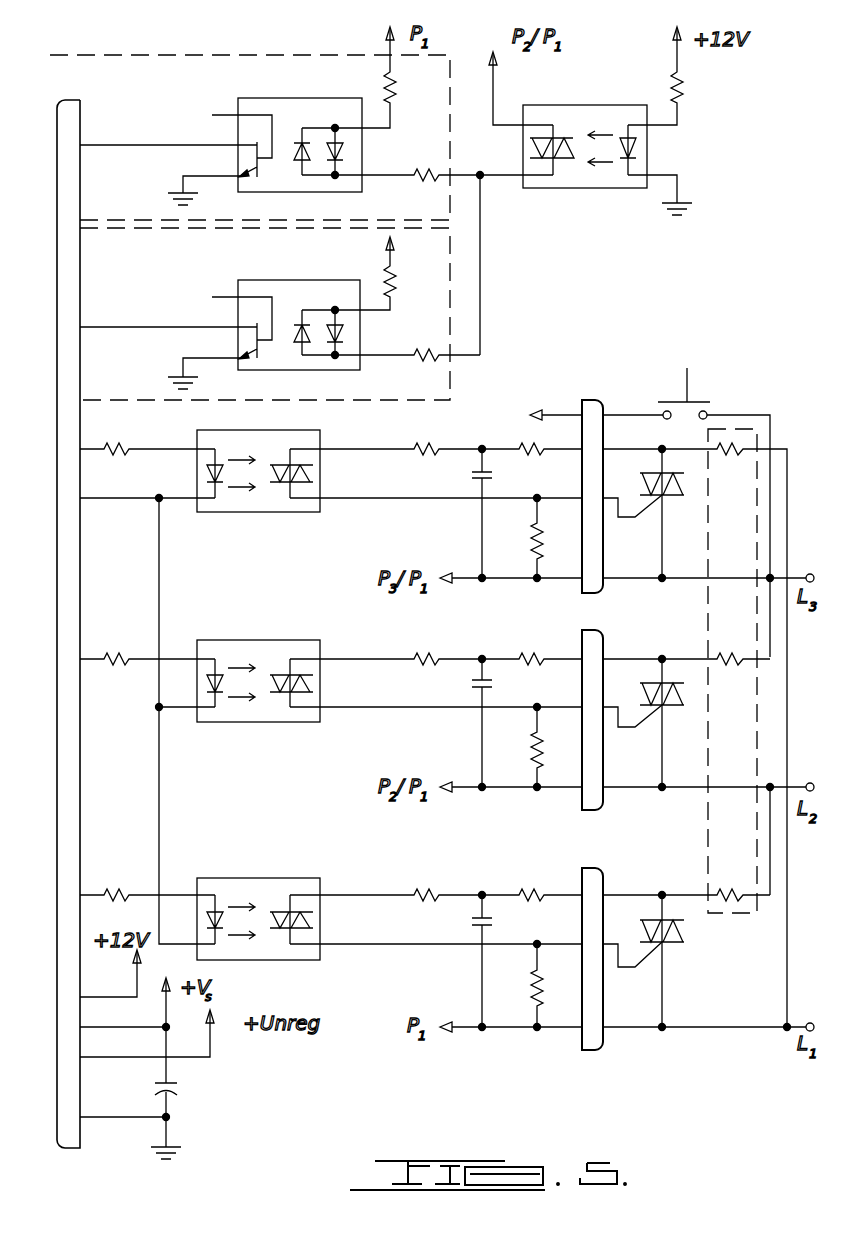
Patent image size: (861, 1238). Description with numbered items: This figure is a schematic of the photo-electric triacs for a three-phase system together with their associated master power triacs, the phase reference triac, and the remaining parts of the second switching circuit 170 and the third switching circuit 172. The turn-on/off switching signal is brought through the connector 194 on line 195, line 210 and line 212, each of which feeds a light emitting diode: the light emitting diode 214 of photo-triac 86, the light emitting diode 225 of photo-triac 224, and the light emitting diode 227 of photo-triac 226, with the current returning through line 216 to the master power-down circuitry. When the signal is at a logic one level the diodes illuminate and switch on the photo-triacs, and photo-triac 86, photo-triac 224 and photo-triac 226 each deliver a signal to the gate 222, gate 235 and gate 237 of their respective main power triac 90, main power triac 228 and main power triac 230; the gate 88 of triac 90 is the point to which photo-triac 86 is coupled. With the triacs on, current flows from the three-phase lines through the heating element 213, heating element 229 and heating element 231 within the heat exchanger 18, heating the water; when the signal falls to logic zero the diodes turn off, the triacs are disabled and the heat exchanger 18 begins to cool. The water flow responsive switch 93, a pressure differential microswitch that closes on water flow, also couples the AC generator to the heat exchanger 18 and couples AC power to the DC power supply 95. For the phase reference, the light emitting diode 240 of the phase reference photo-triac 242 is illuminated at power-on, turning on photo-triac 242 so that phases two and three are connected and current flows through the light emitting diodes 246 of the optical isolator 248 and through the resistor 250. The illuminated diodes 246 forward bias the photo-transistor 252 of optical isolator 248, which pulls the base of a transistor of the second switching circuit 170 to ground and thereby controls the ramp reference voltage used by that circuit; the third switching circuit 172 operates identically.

The heat exchanger 18 is at (708, 818).
The photo-triac 86 is at (271, 897).
The gate 88 is at (372, 944).
The main power triac 90 is at (672, 942).
The water flow responsive switch 93 is at (690, 387).
The DC power supply 95 is at (546, 388).
The second switching circuit 170 is at (355, 402).
The third switching circuit 172 is at (226, 54).
The connector 194 is at (72, 755).
The line 195 is at (90, 895).
The line 210 is at (180, 657).
The line 212 is at (175, 449).
The heating element 213 is at (725, 885).
The light emitting diode 214 is at (218, 912).
The line 216 is at (96, 499).
The gate 222 is at (632, 968).
The photo-triac 224 is at (264, 675).
The light emitting diode 225 is at (220, 693).
The photo-triac 226 is at (276, 492).
The light emitting diode 227 is at (218, 483).
The main power triac 228 is at (672, 702).
The heating element 229 is at (722, 652).
The main power triac 230 is at (665, 497).
The heating element 231 is at (740, 440).
The gate 235 is at (632, 728).
The gate 237 is at (640, 518).
The light emitting diode 240 is at (637, 143).
The phase reference photo-triac 242 is at (612, 130).
The light emitting diodes 246 is at (340, 335).
The optical isolator 248 is at (252, 319).
The resistor 250 is at (395, 270).
The photo-transistor 252 is at (252, 327).